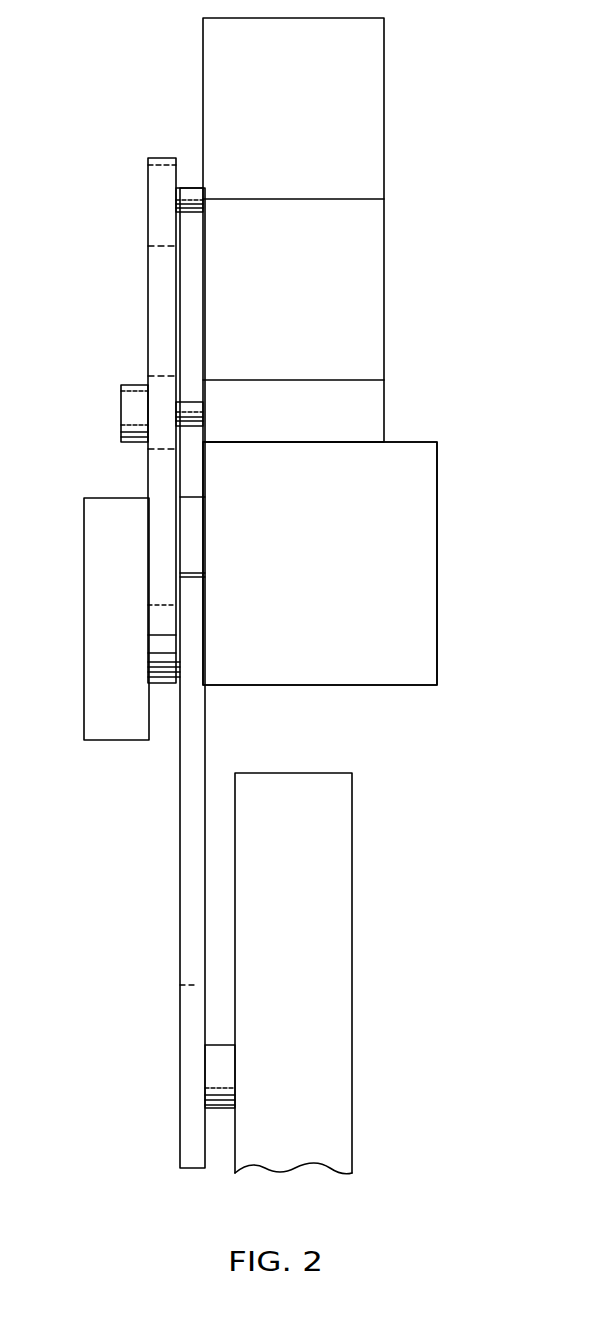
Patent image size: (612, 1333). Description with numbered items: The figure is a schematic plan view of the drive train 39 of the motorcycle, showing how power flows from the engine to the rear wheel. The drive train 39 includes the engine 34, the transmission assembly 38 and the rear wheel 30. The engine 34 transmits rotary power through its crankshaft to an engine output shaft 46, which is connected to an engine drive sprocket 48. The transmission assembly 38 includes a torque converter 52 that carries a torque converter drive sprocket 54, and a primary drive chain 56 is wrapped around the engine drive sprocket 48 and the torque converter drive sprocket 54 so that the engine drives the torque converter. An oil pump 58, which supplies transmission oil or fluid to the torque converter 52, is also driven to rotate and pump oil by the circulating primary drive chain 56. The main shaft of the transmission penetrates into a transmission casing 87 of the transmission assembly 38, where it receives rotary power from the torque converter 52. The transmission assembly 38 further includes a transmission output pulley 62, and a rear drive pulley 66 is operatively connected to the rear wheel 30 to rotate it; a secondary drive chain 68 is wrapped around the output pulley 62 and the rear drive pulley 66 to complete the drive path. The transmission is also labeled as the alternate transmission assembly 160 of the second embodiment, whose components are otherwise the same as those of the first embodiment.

The drive train 39 is at (117, 76).
The engine 34 is at (372, 88).
The transmission casing 87 is at (403, 440).
The transmission assembly 38 is at (418, 486).
The alternate transmission assembly 160 is at (320, 563).
The rear wheel 30 is at (352, 855).
The secondary drive chain 68 is at (180, 905).
The primary drive chain 56 is at (148, 338).
The engine drive sprocket 48 is at (160, 248).
The engine output shaft 46 is at (188, 187).
The oil pump 58 is at (121, 415).
The torque converter 52 is at (84, 632).
The torque converter drive sprocket 54 is at (163, 562).
The transmission output pulley 62 is at (188, 662).
The rear drive pulley 66 is at (196, 985).